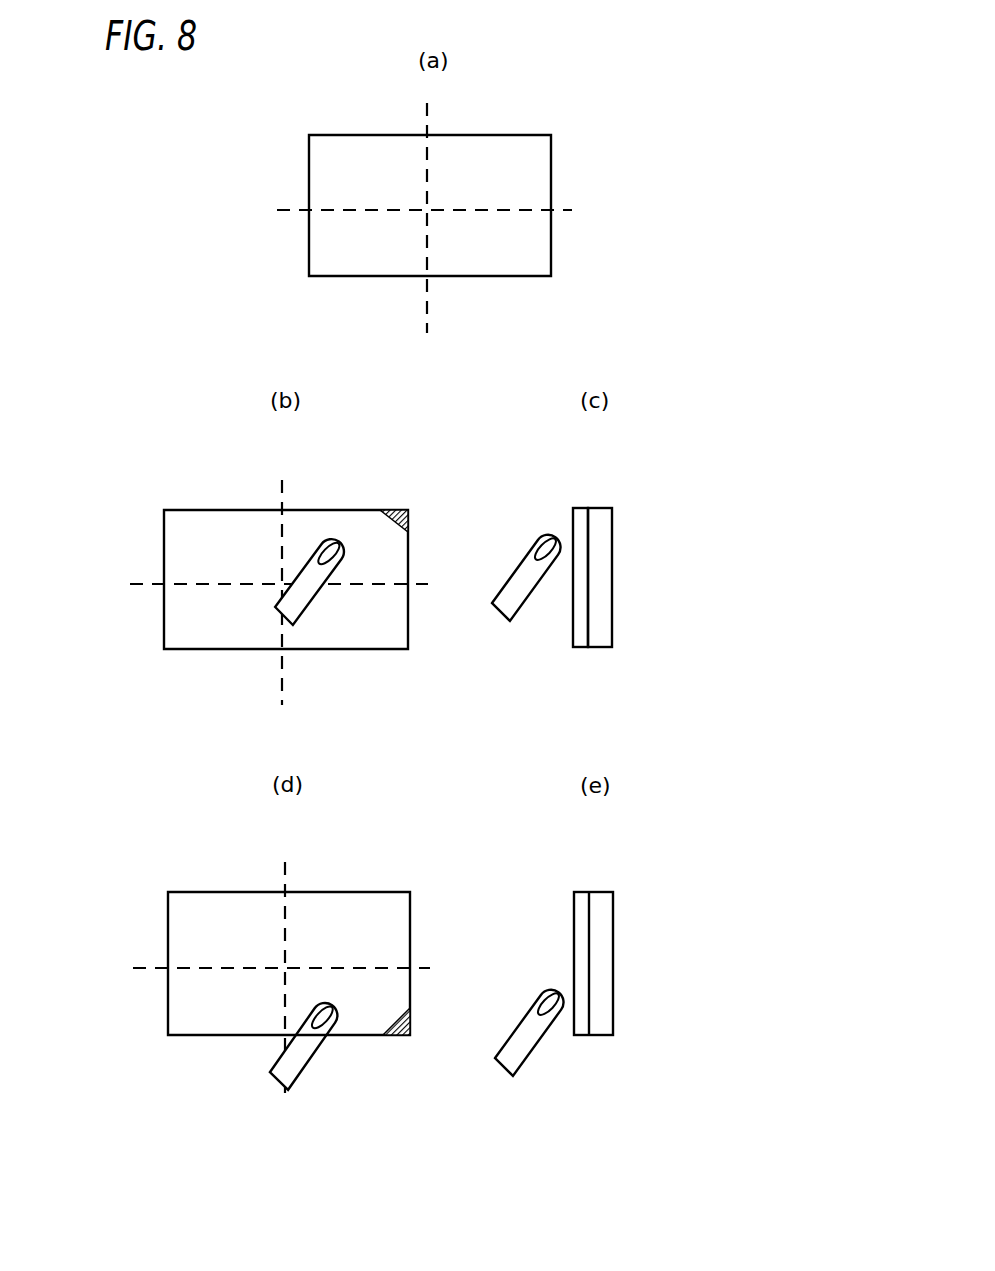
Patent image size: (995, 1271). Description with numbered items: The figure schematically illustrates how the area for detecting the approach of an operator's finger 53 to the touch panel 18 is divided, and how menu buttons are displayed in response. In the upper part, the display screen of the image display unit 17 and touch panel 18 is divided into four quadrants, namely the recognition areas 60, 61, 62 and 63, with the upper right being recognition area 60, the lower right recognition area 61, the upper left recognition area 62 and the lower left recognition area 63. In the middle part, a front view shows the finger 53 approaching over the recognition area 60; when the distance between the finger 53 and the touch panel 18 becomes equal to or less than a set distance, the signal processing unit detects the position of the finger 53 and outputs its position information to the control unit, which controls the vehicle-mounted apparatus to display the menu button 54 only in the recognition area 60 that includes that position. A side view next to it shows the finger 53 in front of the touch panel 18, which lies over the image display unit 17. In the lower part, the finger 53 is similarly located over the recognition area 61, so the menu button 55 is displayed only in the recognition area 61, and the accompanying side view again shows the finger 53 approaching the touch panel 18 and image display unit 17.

The image display unit 17 is at (475, 130).
The touch panel 18 is at (580, 641).
The finger 53 is at (293, 592).
The menu button 54 is at (408, 523).
The menu button 55 is at (411, 1024).
The recognition area 60 is at (537, 176).
The recognition area 61 is at (537, 244).
The recognition area 62 is at (212, 910).
The recognition area 63 is at (212, 1062).